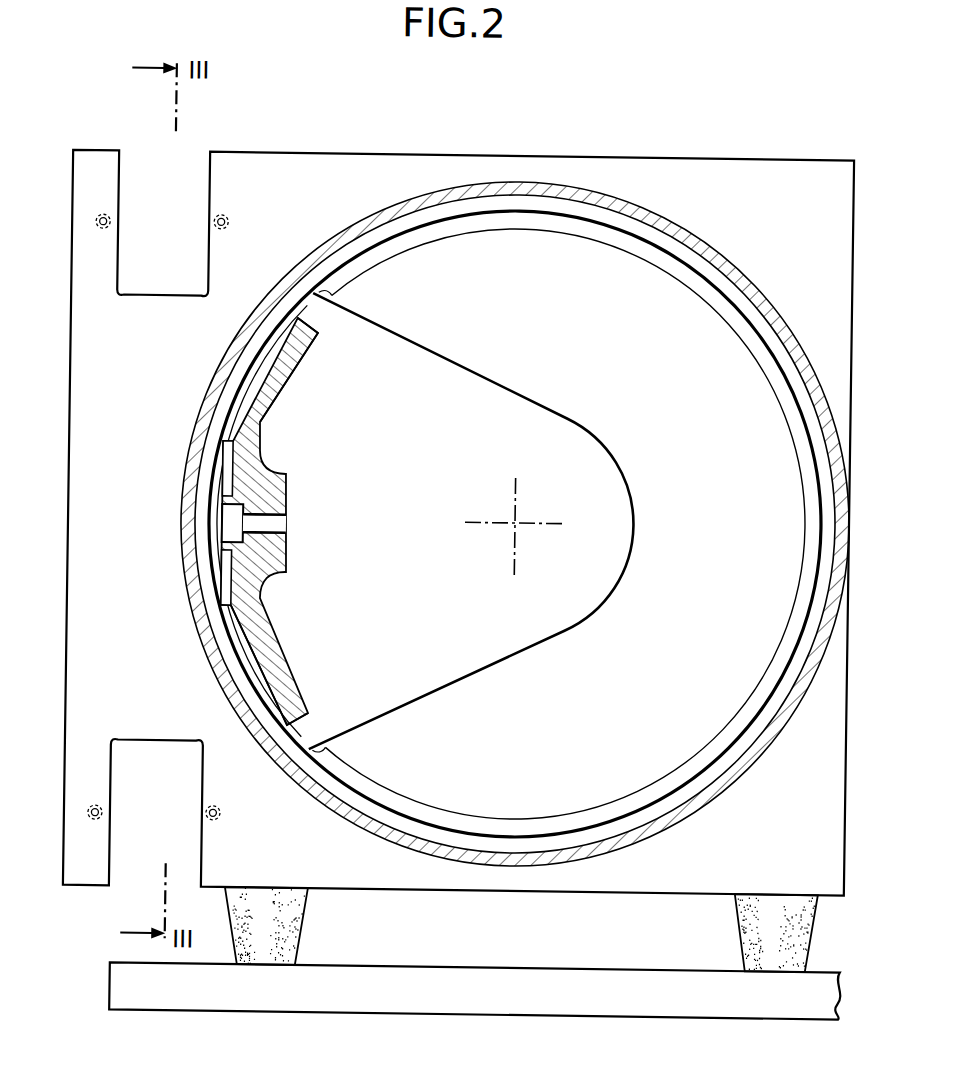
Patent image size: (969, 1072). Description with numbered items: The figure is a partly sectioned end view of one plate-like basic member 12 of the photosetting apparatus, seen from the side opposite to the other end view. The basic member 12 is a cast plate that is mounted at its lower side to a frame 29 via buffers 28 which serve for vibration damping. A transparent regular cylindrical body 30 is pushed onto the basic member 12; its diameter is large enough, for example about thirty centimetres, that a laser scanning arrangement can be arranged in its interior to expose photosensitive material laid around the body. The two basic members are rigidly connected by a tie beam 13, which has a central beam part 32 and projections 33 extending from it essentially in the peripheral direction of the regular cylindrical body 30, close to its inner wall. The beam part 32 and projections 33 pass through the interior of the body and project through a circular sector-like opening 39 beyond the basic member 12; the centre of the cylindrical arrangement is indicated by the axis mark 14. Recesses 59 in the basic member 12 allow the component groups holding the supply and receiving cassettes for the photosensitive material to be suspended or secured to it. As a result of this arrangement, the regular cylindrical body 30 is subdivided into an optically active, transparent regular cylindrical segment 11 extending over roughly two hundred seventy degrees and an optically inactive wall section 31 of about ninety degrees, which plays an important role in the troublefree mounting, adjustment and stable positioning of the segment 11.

The regular cylindrical segment 11 is at (789, 446).
The basic member 12 is at (722, 185).
The tie beam 13 is at (289, 476).
The central axis 14 is at (518, 522).
The buffers 28 is at (304, 938).
The frame 29 is at (508, 988).
The regular cylindrical body 30 is at (309, 250).
The wall section 31 is at (184, 483).
The central beam part 32 is at (287, 546).
The projections 33 is at (300, 346).
The circular sector-like openings 39 is at (486, 378).
The recesses 59 is at (115, 172).